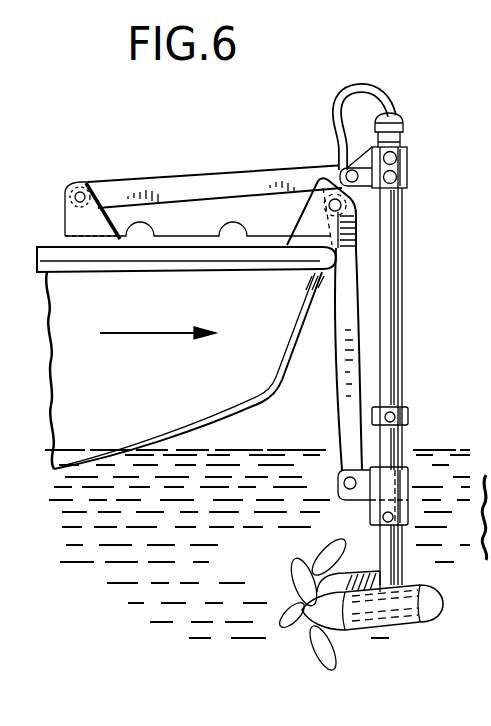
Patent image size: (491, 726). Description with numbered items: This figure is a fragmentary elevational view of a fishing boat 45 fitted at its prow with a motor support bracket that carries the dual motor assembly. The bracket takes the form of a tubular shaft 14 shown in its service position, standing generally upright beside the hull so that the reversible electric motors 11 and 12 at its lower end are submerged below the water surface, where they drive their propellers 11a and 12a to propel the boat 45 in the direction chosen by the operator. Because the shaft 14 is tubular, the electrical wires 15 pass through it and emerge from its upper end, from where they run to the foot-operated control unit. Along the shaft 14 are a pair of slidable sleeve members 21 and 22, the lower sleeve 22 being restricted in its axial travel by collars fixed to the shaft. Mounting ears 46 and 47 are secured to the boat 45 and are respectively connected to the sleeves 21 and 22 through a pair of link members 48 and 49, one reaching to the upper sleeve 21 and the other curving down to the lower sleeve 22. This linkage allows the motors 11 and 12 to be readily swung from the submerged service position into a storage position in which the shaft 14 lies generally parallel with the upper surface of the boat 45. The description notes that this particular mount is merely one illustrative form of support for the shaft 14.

The reversible electric motor 11 is at (360, 574).
The propeller 11a is at (301, 562).
The reversible electric motor 12 is at (406, 623).
The propeller 12a is at (330, 660).
The shaft 14 is at (392, 397).
The electrical wires 15 is at (356, 86).
The slidable sleeve member 21 is at (408, 164).
The slidable sleeve member 22 is at (412, 475).
The boat 45 is at (208, 416).
The mounting ear 46 is at (76, 184).
The mounting ear 47 is at (308, 210).
The link member 48 is at (164, 190).
The link member 49 is at (350, 364).